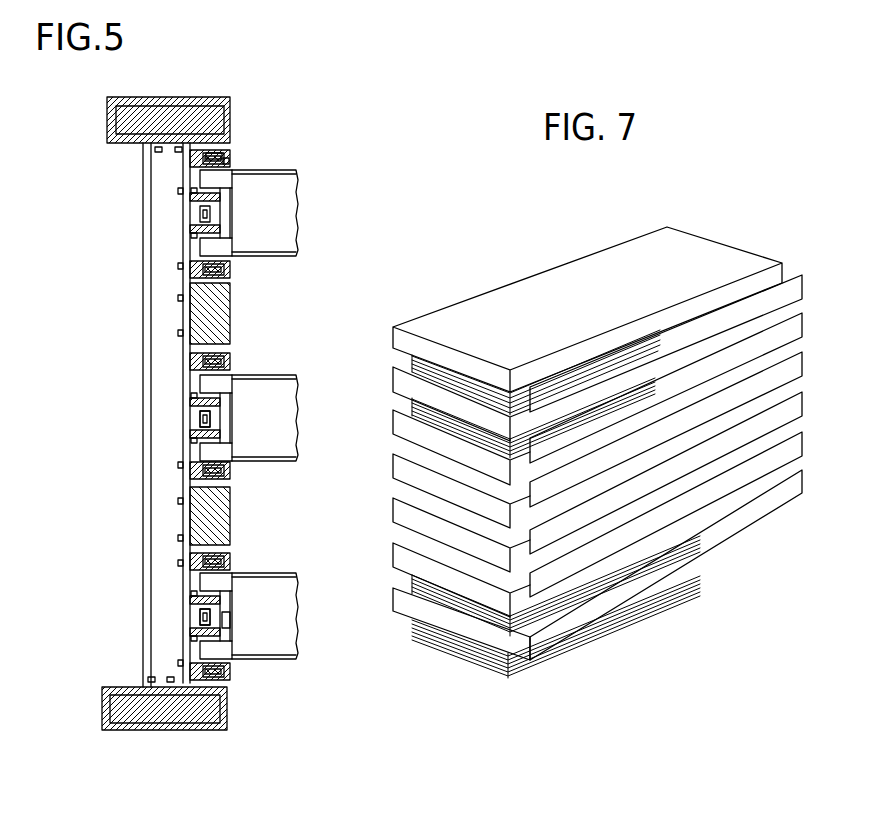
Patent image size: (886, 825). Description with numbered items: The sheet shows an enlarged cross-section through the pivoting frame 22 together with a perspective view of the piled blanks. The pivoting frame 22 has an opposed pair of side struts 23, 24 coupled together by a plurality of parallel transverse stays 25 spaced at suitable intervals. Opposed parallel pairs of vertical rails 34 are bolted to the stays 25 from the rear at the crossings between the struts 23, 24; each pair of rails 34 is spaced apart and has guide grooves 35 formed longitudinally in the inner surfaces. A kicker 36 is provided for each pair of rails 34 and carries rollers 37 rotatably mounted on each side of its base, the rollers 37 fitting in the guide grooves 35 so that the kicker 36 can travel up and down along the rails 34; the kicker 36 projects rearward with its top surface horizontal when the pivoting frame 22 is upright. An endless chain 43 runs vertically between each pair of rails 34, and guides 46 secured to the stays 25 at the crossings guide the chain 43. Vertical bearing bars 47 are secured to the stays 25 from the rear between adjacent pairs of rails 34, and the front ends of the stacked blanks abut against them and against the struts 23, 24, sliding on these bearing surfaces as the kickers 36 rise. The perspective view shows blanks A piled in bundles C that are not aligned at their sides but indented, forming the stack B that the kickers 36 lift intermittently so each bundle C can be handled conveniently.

In FIG. 5, the pivoting frame 22 is at (103, 131).
In FIG. 5, the side strut 23 is at (163, 731).
In FIG. 5, the side strut 24 is at (158, 97).
In FIG. 5, the transverse stays 25 is at (163, 442).
In FIG. 5, the vertical rails 34 is at (231, 341).
In FIG. 5, the guide grooves 35 is at (227, 153).
In FIG. 5, the kicker 36 is at (300, 189).
In FIG. 5, the rollers 37 is at (229, 163).
In FIG. 5, the endless chain 43 is at (230, 622).
In FIG. 5, the guides 46 is at (195, 428).
In FIG. 5, the vertical bearing bars 47 is at (222, 516).
In FIG. 7, the blanks A is at (503, 670).
In FIG. 7, the stack of blanks B is at (511, 278).
In FIG. 7, the bundles C is at (685, 575).